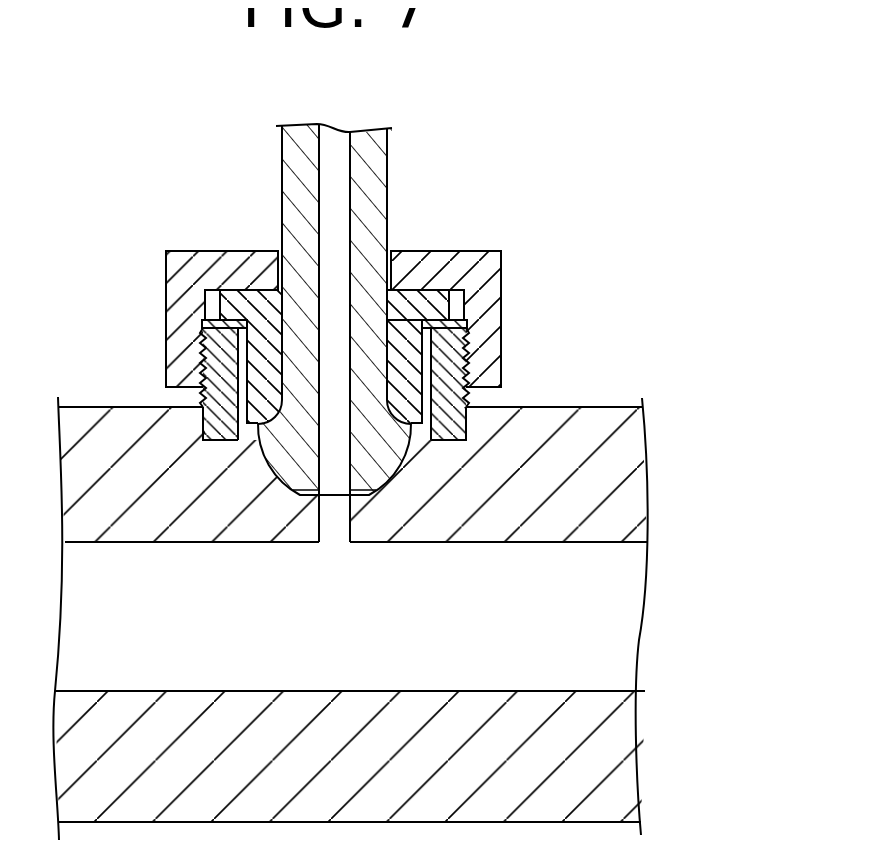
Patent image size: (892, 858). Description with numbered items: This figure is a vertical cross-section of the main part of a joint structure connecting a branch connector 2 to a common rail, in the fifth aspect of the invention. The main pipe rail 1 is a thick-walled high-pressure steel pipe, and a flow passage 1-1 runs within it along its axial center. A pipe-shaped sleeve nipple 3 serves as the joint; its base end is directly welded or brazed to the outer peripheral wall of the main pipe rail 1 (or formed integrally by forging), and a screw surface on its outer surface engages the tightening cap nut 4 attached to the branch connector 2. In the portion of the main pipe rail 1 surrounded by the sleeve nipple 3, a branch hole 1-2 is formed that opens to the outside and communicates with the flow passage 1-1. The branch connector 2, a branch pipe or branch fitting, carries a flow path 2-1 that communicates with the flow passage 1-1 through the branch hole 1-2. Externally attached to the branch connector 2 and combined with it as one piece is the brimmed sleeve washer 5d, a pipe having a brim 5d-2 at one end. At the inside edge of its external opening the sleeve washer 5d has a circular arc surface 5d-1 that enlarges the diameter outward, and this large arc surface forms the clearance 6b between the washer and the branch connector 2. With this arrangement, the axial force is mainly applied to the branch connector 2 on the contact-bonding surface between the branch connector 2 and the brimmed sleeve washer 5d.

The main pipe rail 1 is at (630, 476).
The flow passage 1-1 is at (603, 541).
The branch hole 1-2 is at (331, 527).
The branch connector 2 is at (388, 143).
The flow path 2-1 is at (332, 155).
The sleeve nipple 3 is at (203, 398).
The tightening cap nut 4 is at (178, 291).
The sleeve washer 5d is at (463, 337).
The circular arc surface 5d-1 is at (360, 282).
The brim 5d-2 is at (428, 303).
The clearance 6b is at (280, 300).